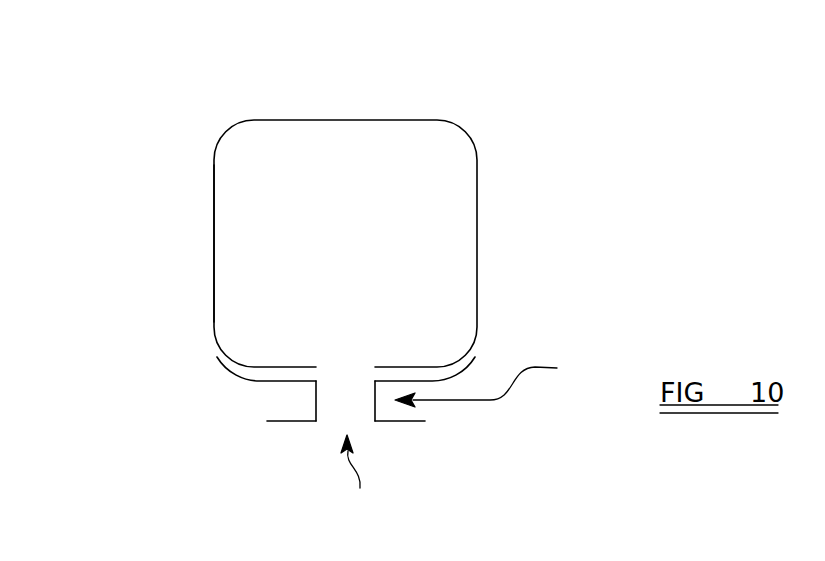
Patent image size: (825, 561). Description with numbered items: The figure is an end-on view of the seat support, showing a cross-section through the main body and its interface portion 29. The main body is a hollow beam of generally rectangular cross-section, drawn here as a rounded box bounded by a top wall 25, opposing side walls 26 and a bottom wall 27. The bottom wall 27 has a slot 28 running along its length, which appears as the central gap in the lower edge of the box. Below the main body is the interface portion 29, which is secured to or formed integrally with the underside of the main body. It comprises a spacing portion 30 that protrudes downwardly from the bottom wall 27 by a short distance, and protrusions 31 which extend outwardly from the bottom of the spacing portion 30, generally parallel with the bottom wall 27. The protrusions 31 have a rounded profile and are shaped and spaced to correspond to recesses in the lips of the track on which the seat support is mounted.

The top wall 25 is at (347, 120).
The side walls 26 is at (214, 230).
The bottom wall 27 is at (253, 362).
The slot 28 is at (348, 369).
The interface portion 29 is at (357, 479).
The spacing portion 30 is at (496, 380).
The protrusions 31 is at (403, 422).